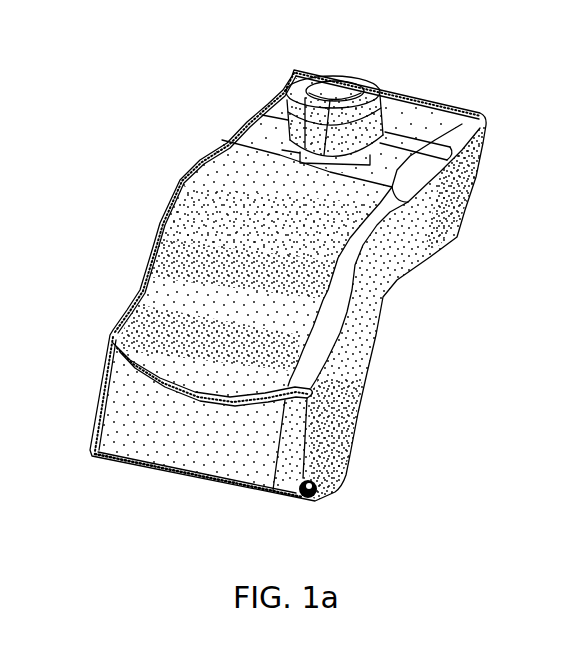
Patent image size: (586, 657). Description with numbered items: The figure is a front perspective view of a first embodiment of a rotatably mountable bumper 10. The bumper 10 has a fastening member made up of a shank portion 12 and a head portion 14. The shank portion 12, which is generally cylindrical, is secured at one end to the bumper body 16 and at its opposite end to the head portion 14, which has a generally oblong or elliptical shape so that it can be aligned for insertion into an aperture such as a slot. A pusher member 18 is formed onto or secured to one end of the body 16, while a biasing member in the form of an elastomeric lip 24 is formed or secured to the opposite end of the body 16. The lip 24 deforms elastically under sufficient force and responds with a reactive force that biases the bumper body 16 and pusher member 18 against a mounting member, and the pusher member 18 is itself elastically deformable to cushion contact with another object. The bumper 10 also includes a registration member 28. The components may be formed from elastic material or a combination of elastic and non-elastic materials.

The rotatably mountable bumper 10 is at (143, 149).
The shank portion 12 is at (235, 155).
The head portion 14 is at (327, 84).
The bumper body 16 is at (265, 113).
The pusher member 18 is at (303, 505).
The elastomeric lip 24 is at (407, 98).
The registration member 28 is at (195, 368).